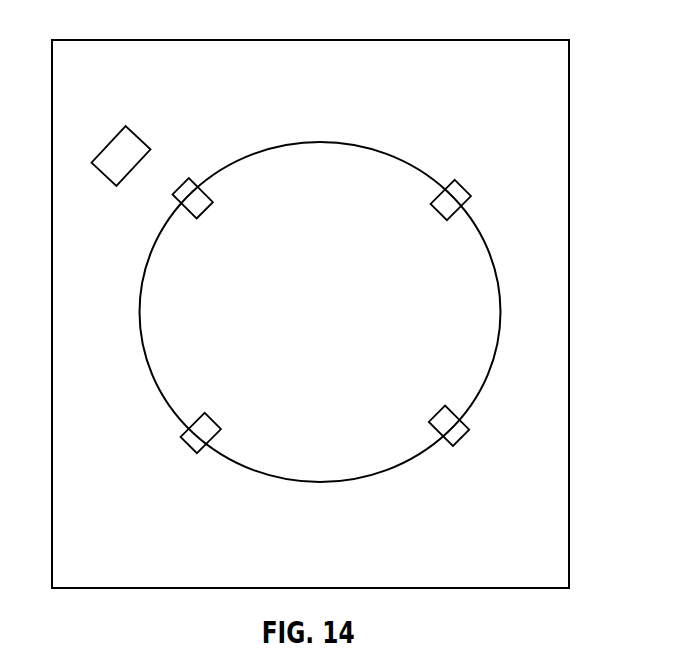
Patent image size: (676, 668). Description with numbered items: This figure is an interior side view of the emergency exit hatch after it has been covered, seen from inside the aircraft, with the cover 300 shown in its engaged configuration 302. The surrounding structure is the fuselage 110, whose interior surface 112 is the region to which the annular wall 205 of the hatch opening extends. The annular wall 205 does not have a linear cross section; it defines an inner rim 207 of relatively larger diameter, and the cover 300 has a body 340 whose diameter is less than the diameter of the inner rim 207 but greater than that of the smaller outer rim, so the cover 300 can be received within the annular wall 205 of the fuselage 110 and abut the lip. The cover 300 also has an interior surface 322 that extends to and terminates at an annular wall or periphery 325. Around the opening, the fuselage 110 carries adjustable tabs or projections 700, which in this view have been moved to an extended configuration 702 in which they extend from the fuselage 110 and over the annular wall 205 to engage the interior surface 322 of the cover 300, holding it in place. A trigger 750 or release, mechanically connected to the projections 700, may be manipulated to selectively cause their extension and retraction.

The fuselage 110 is at (115, 39).
The interior surface 112 is at (555, 82).
The extended configuration 702 is at (303, 129).
The engaged configuration 302 is at (242, 105).
The trigger 750 is at (105, 140).
The projections 700 is at (458, 184).
The annular wall or periphery 325 is at (172, 412).
The annular wall 205 is at (160, 235).
The inner rim 207 is at (148, 368).
The interior surface 322 is at (393, 252).
The cover 300 is at (332, 327).
The body 340 is at (393, 384).